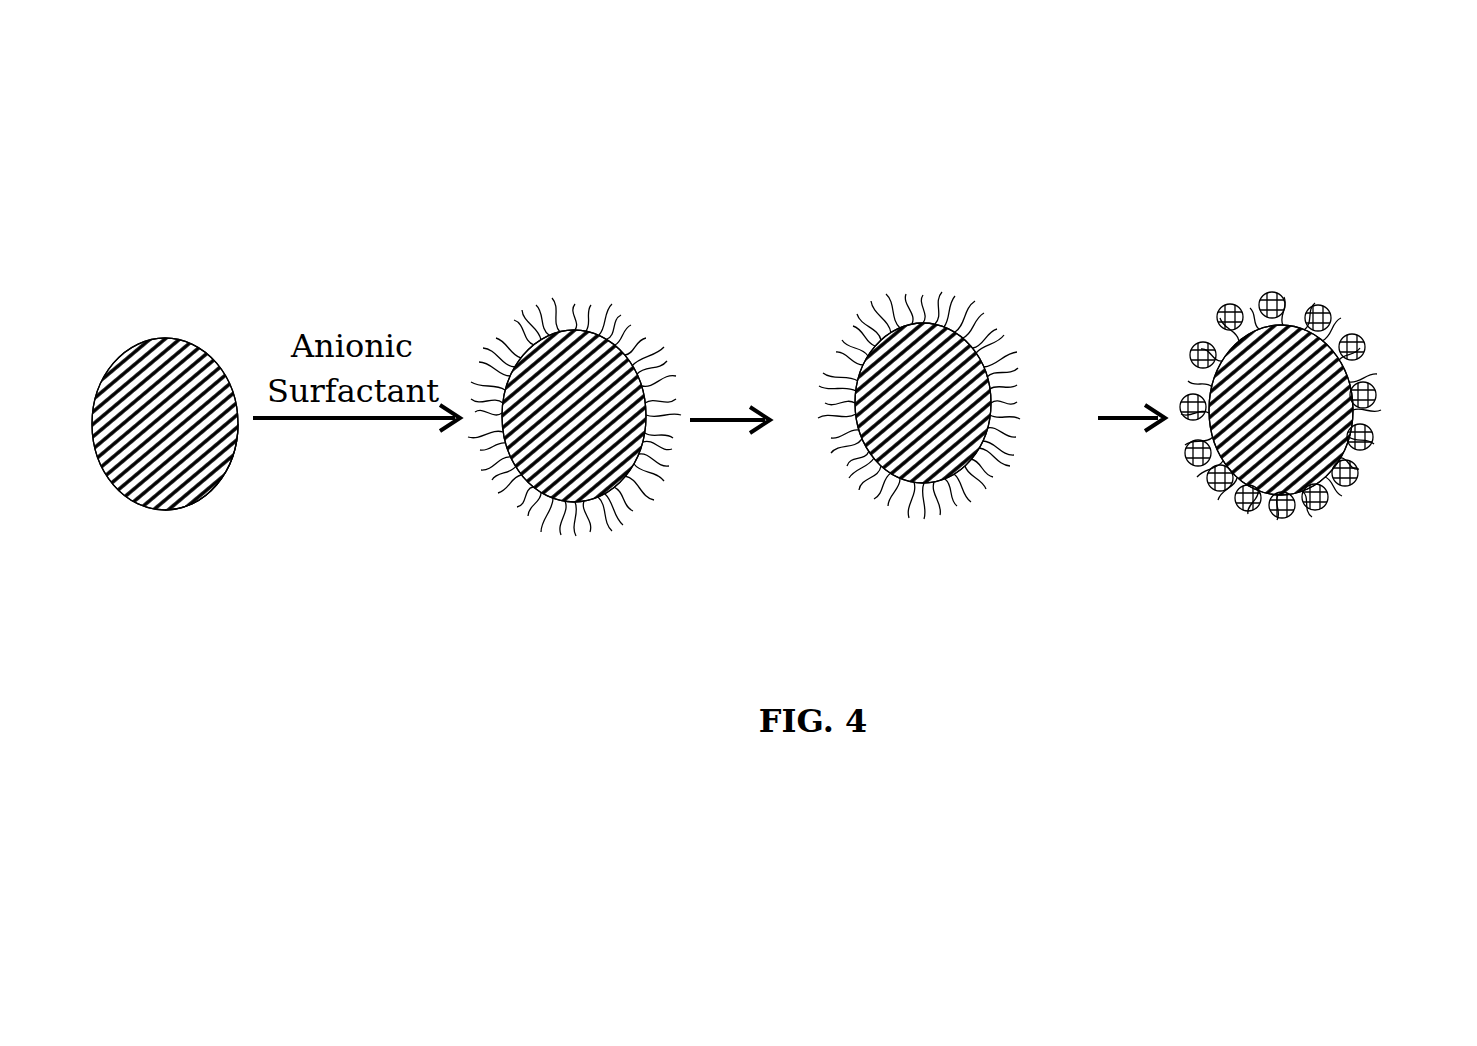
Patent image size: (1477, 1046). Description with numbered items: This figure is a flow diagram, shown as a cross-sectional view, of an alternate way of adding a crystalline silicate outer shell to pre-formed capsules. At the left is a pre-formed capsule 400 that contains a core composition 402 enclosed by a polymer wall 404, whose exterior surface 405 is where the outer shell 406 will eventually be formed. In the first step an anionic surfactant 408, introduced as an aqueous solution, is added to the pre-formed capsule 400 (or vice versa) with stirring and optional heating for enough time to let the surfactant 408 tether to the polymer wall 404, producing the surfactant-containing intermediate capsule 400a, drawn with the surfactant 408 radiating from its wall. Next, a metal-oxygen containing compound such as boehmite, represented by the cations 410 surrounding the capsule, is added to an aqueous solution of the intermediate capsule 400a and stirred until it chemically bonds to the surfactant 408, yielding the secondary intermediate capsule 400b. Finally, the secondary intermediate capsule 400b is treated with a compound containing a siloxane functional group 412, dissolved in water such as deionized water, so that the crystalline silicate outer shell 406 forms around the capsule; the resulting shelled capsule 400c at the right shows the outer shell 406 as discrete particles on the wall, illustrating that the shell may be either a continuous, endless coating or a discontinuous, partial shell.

The pre-formed capsule 400 is at (168, 316).
The surfactant-containing intermediate capsule 400a is at (566, 288).
The secondary intermediate capsule 400b is at (986, 260).
The PCM capsule with cation beads 400c is at (1266, 268).
The core composition 402 is at (200, 362).
The polymer wall 404 is at (112, 366).
The exterior surface 405 is at (237, 468).
The outer shell 406 is at (1370, 345).
The anionic surfactant 408 is at (660, 355).
The cation X+ 410 is at (722, 410).
The compound containing a siloxane functional group 412 is at (1124, 410).